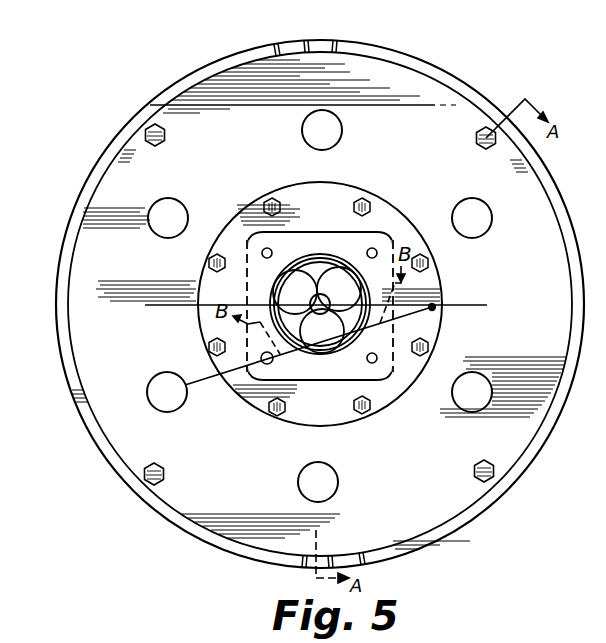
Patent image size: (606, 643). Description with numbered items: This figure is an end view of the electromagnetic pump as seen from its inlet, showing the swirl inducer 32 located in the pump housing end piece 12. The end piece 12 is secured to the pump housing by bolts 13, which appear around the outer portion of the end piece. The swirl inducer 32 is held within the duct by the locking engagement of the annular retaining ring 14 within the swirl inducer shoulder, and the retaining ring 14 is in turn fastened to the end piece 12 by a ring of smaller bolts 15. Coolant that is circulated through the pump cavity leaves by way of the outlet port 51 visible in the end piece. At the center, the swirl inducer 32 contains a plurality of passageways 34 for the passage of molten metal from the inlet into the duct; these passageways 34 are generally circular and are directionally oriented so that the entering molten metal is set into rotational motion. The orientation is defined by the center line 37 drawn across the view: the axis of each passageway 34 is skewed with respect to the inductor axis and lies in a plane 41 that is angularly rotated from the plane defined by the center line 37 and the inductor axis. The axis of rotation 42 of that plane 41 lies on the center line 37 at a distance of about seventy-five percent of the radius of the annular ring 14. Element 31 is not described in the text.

The pump housing end piece 12 is at (420, 100).
The bolts 13 is at (166, 134).
The retaining ring 14 is at (388, 200).
The bolts 15 is at (278, 200).
The pivot pin 31 is at (262, 363).
The swirl inducer 32 is at (320, 346).
The passageways 34 is at (296, 290).
The center line 37 is at (468, 304).
The plane 41 is at (407, 380).
The axis of rotation 42 is at (437, 312).
The outlet port 51 is at (182, 201).